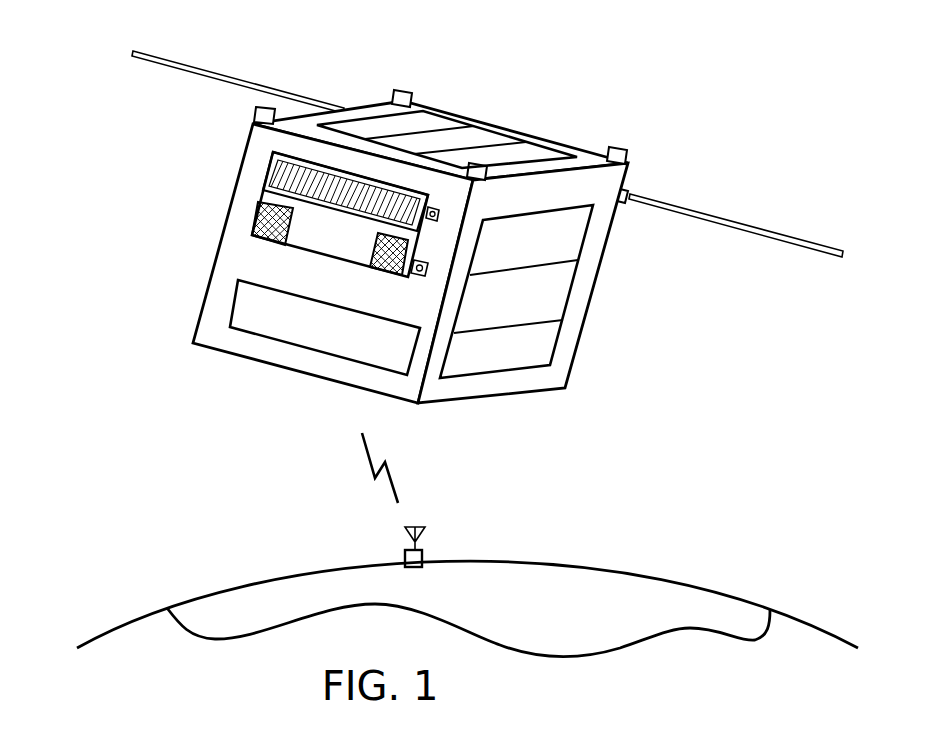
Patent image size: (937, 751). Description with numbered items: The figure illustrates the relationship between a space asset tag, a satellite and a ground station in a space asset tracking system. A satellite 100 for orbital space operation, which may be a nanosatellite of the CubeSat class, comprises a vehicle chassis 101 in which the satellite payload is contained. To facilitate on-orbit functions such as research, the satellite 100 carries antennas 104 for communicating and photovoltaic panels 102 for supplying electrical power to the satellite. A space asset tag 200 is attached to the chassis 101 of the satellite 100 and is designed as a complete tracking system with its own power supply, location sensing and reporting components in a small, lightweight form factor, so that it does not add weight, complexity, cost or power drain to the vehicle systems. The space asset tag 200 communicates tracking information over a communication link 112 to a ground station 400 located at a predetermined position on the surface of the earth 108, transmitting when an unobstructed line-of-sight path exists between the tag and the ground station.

The satellite 100 is at (188, 384).
The vehicle chassis 101 is at (285, 357).
The photovoltaic panels 102 is at (470, 143).
The antennas 104 is at (192, 67).
The earth 108 is at (137, 617).
The communication link 112 is at (397, 489).
The space asset tag 200 is at (263, 248).
The ground station 400 is at (423, 555).